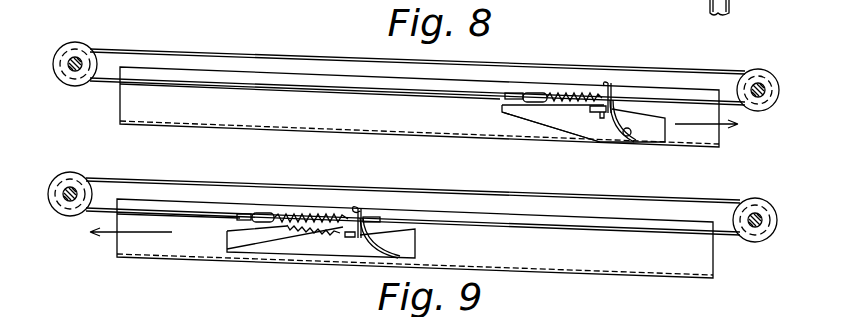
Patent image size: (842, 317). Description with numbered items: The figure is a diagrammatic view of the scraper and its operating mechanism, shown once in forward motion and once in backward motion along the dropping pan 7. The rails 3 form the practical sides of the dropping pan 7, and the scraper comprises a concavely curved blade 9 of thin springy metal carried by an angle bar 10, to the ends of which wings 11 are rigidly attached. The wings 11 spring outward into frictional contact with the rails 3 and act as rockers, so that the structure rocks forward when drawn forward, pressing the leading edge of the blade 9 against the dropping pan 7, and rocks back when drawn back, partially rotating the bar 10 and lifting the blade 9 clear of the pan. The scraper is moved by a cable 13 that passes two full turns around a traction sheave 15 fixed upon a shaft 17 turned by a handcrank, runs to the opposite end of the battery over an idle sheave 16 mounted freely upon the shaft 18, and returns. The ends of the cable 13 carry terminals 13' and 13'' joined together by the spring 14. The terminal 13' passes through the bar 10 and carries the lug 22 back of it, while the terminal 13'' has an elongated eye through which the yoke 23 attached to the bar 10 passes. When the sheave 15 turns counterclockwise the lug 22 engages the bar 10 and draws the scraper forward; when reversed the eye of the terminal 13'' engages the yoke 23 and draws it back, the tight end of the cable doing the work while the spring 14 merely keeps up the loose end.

In FIG. 8, the rails 3 is at (419, 107).
In FIG. 9, the rails 3 is at (415, 238).
In FIG. 8, the dropping pan 7 is at (244, 125).
In FIG. 8, the blade 9 is at (620, 136).
In FIG. 9, the blade 9 is at (402, 238).
In FIG. 8, the angle bar 10 is at (610, 86).
In FIG. 8, the wings 11 is at (584, 128).
In FIG. 9, the wings 11 is at (321, 242).
In FIG. 8, the cable 13 is at (417, 73).
In FIG. 9, the cable 13 is at (413, 197).
In FIG. 9, the end terminal 13' is at (383, 193).
In FIG. 8, the end terminal 13'' is at (526, 72).
In FIG. 9, the end terminal 13'' is at (259, 191).
In FIG. 8, the spring 14 is at (562, 94).
In FIG. 9, the spring 14 is at (313, 215).
In FIG. 8, the traction sheave 15 is at (763, 69).
In FIG. 9, the traction sheave 15 is at (764, 200).
In FIG. 8, the idle sheave 16 is at (80, 44).
In FIG. 9, the idle sheave 16 is at (78, 175).
In FIG. 8, the shaft 17 is at (772, 86).
In FIG. 9, the shaft 17 is at (772, 212).
In FIG. 8, the shaft 18 is at (66, 57).
In FIG. 9, the shaft 18 is at (62, 187).
In FIG. 9, the lug 22 is at (352, 208).
In FIG. 8, the yoke 23 is at (548, 108).
In FIG. 9, the yoke 23 is at (292, 228).